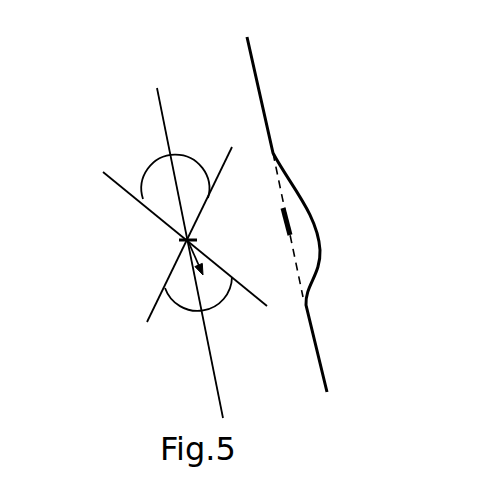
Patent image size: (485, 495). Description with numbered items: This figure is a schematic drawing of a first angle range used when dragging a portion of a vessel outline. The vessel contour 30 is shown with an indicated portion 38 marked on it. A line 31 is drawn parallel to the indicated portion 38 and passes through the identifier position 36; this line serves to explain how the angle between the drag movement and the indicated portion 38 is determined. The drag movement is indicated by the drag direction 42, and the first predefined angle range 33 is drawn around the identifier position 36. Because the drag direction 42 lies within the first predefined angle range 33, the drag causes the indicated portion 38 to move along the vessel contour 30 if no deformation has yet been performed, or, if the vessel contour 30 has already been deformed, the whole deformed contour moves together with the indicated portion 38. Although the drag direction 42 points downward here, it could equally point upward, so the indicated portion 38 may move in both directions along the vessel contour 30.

The vessel contour 30 is at (280, 193).
The line 31 is at (158, 119).
The first predefined angle range 33 is at (196, 179).
The identifier position 36 is at (186, 240).
The indicated portion 38 is at (289, 217).
The drag direction 42 is at (189, 242).